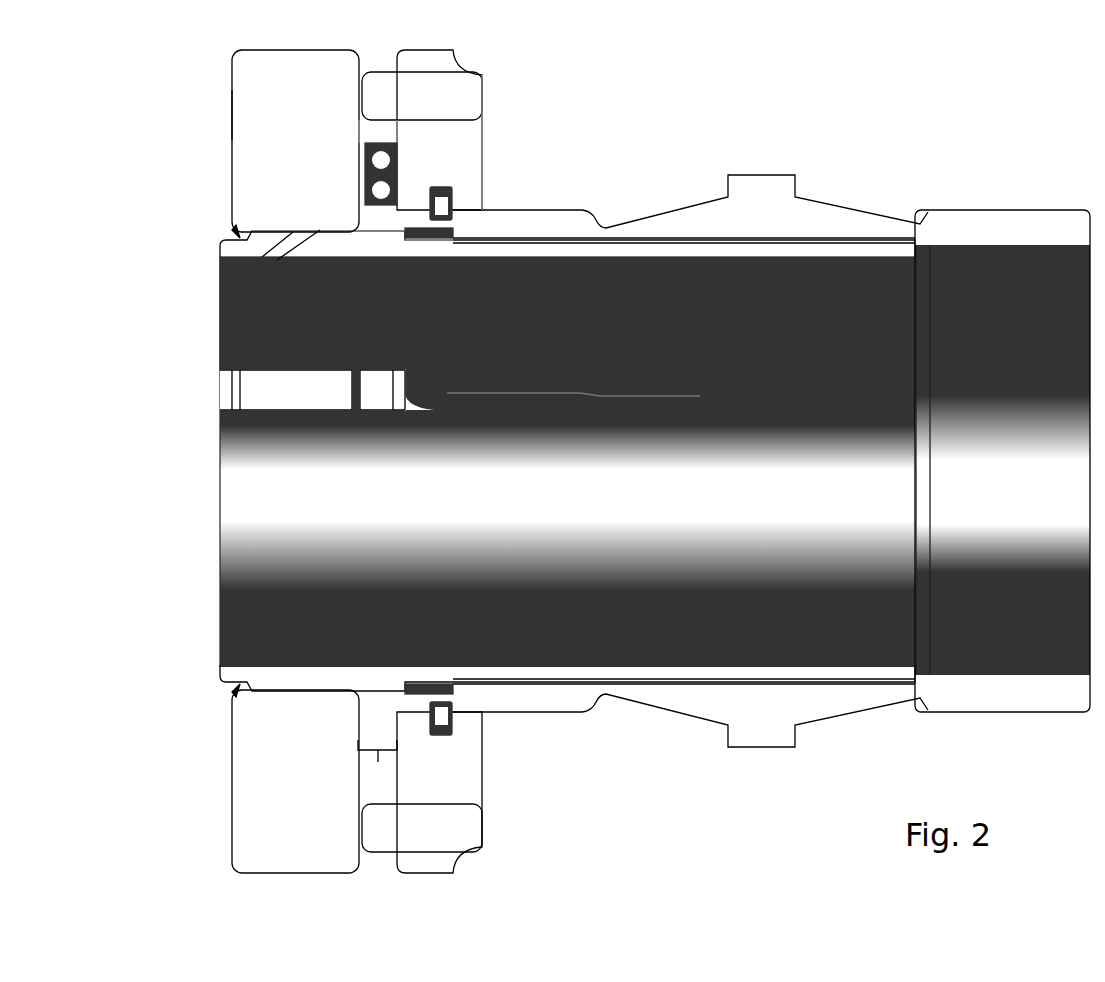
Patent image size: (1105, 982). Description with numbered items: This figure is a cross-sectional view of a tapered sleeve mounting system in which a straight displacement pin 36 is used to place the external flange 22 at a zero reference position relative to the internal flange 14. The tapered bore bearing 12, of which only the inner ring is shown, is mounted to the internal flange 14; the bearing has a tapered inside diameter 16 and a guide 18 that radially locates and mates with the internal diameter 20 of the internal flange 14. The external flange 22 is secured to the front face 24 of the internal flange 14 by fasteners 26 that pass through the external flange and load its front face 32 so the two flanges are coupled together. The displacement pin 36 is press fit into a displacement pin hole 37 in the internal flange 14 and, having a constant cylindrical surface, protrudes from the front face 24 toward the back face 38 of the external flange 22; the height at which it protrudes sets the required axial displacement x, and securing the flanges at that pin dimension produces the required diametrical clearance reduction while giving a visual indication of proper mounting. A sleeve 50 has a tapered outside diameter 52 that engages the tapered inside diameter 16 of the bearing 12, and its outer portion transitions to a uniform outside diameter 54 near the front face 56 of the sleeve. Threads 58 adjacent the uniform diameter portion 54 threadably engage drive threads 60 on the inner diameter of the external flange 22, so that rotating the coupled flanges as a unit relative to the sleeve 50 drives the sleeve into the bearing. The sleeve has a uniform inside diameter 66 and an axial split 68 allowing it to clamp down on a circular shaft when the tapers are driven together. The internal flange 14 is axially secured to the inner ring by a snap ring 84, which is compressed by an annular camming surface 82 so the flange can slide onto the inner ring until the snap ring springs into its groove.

The tapered bore bearing 12 is at (812, 195).
The internal flange 14 is at (482, 172).
The tapered inside diameter 16 is at (700, 268).
The guide 18 is at (422, 217).
The internal diameter 20 is at (462, 215).
The external flange 22 is at (262, 73).
The front face 24 is at (400, 187).
The fasteners 26 is at (370, 157).
The front face 32 is at (232, 100).
The displacement pin 36 is at (477, 90).
The displacement pin hole 37 is at (443, 74).
The back face 38 is at (360, 124).
The sleeve 50 is at (222, 250).
The tapered outside diameter 52 is at (617, 237).
The uniform outside diameter 54 is at (440, 243).
The front face 56 is at (263, 244).
The threads 58 is at (262, 257).
The drive threads 60 is at (277, 260).
The uniform inside diameter 66 is at (733, 262).
The axial split 68 is at (277, 372).
The annular camming surface 82 is at (400, 707).
The snap ring 84 is at (443, 722).
The required axial displacement x is at (378, 762).